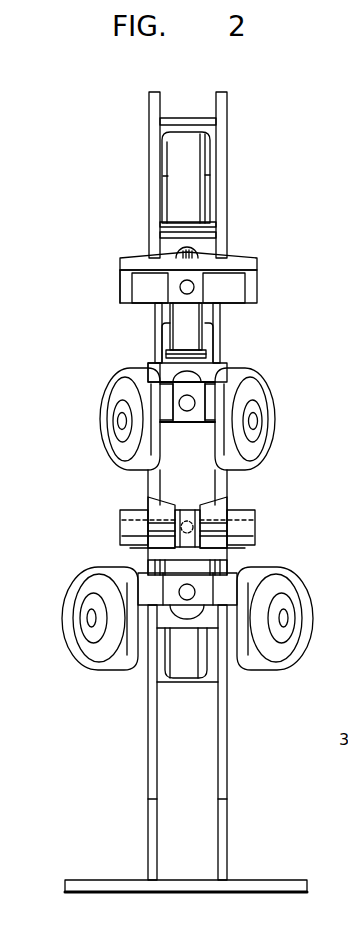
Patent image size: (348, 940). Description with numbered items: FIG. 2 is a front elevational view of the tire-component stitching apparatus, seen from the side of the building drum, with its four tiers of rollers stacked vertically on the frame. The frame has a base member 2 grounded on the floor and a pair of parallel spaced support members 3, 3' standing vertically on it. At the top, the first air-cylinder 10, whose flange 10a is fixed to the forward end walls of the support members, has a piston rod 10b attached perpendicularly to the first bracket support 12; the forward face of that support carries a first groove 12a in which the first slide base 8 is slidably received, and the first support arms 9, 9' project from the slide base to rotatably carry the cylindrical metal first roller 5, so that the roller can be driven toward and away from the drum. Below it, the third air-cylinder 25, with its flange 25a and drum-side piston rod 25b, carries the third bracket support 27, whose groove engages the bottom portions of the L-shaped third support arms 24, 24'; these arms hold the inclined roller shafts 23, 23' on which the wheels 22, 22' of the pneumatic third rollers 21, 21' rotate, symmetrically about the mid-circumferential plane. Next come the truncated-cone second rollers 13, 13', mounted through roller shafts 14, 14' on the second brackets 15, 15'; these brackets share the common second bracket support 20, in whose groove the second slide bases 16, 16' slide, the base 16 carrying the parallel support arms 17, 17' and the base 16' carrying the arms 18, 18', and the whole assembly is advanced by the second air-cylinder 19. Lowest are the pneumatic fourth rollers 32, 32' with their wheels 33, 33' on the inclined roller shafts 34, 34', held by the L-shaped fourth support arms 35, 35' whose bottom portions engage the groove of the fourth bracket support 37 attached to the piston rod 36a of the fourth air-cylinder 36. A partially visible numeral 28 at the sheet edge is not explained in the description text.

The base member 2 is at (276, 880).
The support member 3 is at (136, 174).
The support member 3' is at (238, 174).
The first roller 5 is at (197, 325).
The first slide base 8 is at (246, 293).
The first support arm 9 is at (150, 288).
The first support arm 9' is at (224, 288).
The first air-cylinder 10 is at (204, 153).
The flange 10a is at (152, 243).
The piston rod 10b is at (185, 250).
The first bracket support 12 is at (233, 262).
The first groove 12a is at (120, 290).
The second roller 13 is at (142, 518).
The second roller 13' is at (232, 518).
The second roller shaft 14 is at (116, 520).
The second roller shaft 14' is at (260, 520).
The second bracket 15 is at (127, 521).
The second bracket 15' is at (256, 520).
The second slide base 16 is at (112, 520).
The second slide base 16' is at (259, 520).
The second support arm 17 is at (130, 533).
The second support arm 17' is at (125, 555).
The second support arm 18 is at (244, 533).
The second support arm 18' is at (255, 555).
The second air-cylinder 19 is at (222, 573).
The second bracket support 20 is at (185, 498).
The third roller 21 is at (114, 419).
The third roller 21' is at (261, 419).
The wheel 22 is at (100, 421).
The wheel 22' is at (276, 421).
The third roller shaft 23 is at (105, 419).
The third roller shaft 23' is at (272, 419).
The third support arm 24 is at (123, 386).
The third support arm 24' is at (191, 416).
The third air-cylinder 25 is at (158, 336).
The flange 25a is at (153, 366).
The piston rod 25b is at (220, 362).
The third bracket support 27 is at (226, 376).
The adjacent element 28 is at (340, 190).
The fourth roller 32 is at (86, 627).
The fourth roller 32' is at (289, 627).
The wheel 33 is at (65, 630).
The wheel 33' is at (305, 630).
The fourth roller shaft 34 is at (70, 618).
The fourth roller shaft 34' is at (305, 618).
The fourth support arm 35 is at (89, 618).
The fourth support arm 35' is at (284, 618).
The fourth air-cylinder 36 is at (170, 660).
The piston rod 36a is at (229, 668).
The fourth bracket support 37 is at (160, 568).